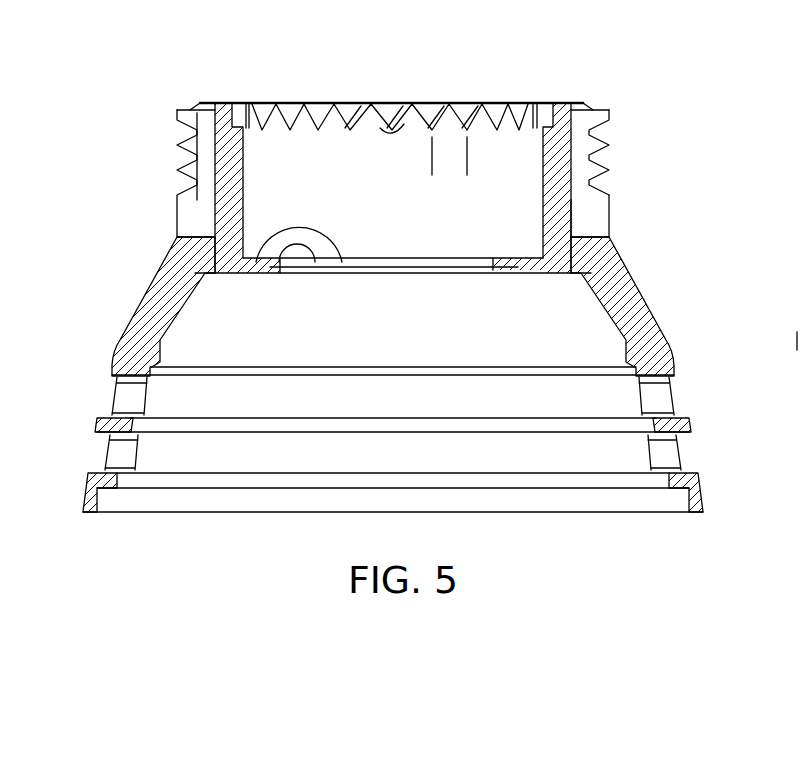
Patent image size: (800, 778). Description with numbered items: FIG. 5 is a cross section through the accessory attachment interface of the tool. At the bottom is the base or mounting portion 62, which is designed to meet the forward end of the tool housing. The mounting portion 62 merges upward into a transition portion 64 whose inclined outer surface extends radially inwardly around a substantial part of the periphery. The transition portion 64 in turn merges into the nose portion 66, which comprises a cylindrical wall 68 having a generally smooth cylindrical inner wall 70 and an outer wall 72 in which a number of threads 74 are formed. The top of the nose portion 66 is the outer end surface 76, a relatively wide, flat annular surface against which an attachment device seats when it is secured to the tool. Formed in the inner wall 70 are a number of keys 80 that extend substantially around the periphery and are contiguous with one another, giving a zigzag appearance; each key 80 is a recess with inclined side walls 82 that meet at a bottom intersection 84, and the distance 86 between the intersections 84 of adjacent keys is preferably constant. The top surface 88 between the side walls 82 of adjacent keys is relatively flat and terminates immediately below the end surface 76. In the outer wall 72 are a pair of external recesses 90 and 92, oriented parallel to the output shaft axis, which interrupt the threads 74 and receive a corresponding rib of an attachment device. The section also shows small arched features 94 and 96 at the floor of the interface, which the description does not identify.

The mounting portion 62 is at (692, 428).
The transition portion 64 is at (635, 300).
The nose portion 66 is at (632, 116).
The cylindrical wall 68 is at (557, 165).
The inner wall 70 is at (540, 195).
The outer wall 72 is at (609, 248).
The threads 74 is at (605, 182).
The outer end surface 76 is at (556, 102).
The keys 80 is at (388, 106).
The inclined side walls 82 is at (400, 110).
The bottom intersection 84 is at (468, 102).
The distance between intersections 86 is at (499, 158).
The top surface 88 is at (454, 103).
The external recess 90 is at (572, 212).
The external recess 92 is at (215, 208).
The outer rib 94 is at (343, 264).
The inner rib 96 is at (313, 258).